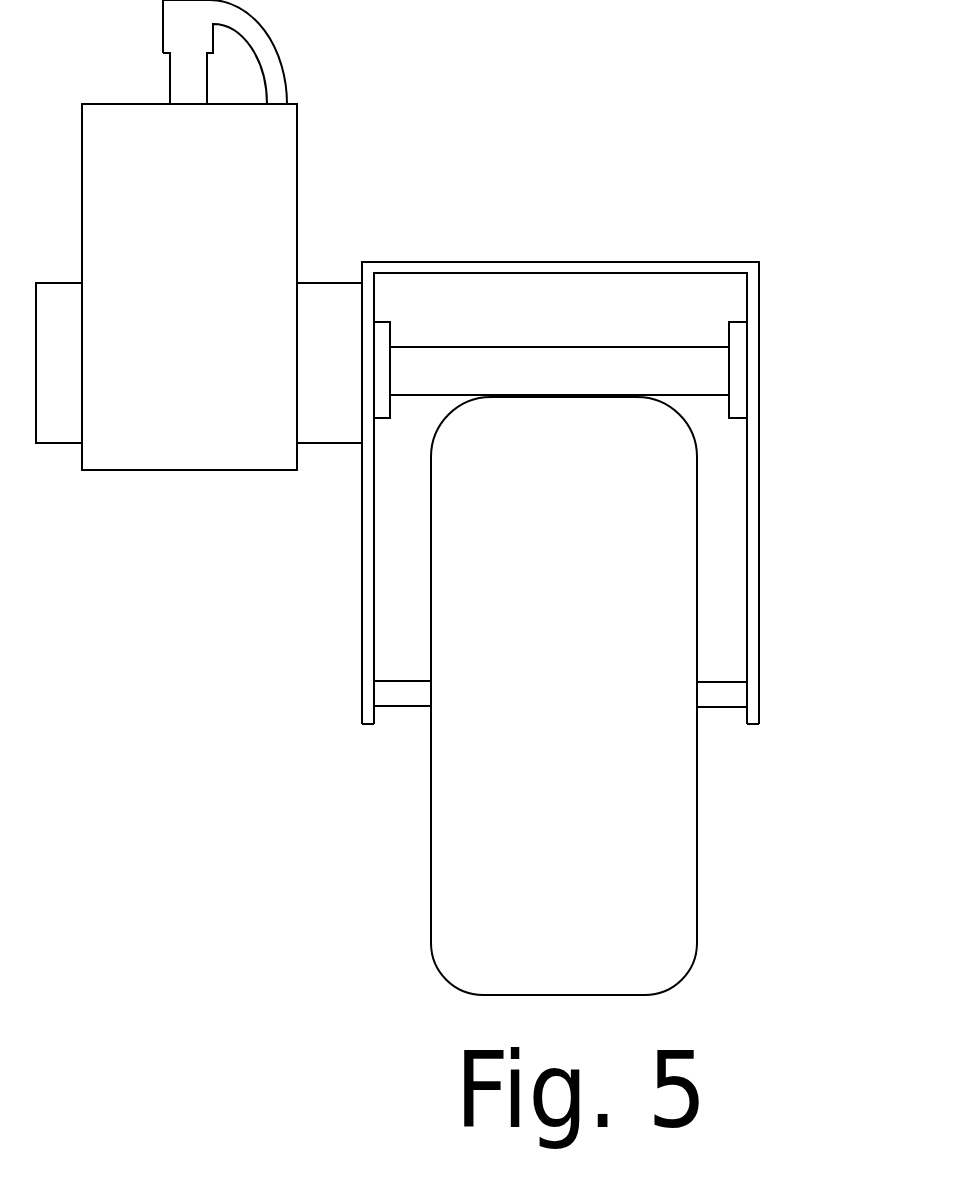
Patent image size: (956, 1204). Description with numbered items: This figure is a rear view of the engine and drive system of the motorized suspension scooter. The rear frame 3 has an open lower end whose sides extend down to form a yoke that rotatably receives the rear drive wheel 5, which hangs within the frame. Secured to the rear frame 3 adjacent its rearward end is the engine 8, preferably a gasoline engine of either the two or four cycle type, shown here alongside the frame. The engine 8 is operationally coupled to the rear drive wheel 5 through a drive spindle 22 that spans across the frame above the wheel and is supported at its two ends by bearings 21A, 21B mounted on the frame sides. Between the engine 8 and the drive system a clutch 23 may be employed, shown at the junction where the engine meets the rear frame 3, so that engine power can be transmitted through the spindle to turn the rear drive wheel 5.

The rear frame 3 is at (770, 663).
The rear drive wheel 5 is at (587, 722).
The engine 8 is at (200, 312).
The bearing 21A is at (725, 407).
The bearing 21B is at (390, 425).
The drive spindle 22 is at (522, 340).
The clutch 23 is at (328, 272).